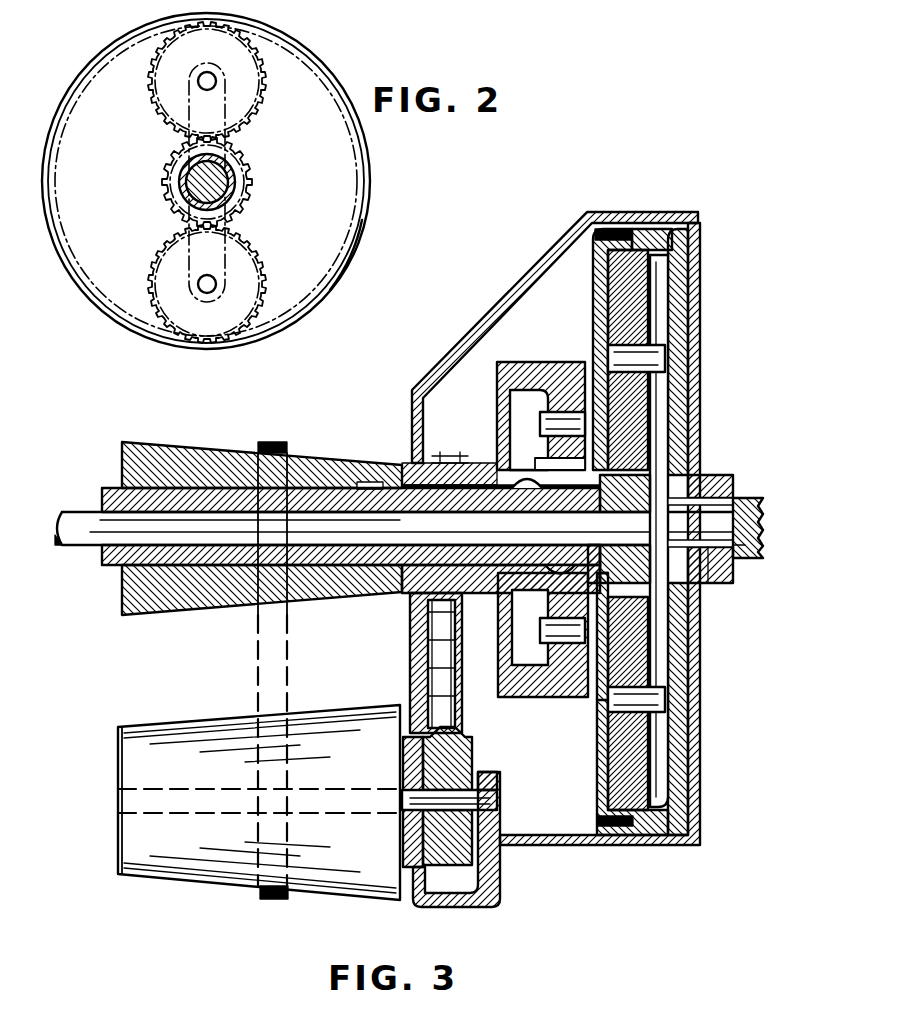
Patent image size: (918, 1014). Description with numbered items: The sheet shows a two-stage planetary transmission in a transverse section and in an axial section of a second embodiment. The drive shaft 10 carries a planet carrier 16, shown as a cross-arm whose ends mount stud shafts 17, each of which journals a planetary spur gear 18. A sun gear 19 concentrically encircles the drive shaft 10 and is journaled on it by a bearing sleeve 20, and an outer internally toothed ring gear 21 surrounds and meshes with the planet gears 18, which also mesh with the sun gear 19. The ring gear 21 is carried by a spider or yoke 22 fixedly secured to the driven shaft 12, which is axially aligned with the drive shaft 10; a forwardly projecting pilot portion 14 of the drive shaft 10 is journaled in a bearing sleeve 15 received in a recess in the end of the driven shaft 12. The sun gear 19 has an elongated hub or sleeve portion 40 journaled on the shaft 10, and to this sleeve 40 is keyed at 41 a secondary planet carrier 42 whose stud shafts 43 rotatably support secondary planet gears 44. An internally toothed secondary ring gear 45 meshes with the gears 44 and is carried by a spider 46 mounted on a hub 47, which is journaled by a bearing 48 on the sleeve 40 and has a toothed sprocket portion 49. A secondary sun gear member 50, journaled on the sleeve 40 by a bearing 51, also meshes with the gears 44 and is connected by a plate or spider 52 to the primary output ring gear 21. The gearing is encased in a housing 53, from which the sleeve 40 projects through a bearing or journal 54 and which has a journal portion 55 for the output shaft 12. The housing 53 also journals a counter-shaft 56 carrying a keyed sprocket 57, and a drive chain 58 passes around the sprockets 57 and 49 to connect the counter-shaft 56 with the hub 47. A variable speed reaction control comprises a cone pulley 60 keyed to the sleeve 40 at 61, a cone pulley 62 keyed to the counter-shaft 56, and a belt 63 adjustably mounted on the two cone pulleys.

In FIG. 2, the drive shaft 10 is at (216, 190).
In FIG. 3, the drive shaft 10 is at (75, 542).
In FIG. 3, the driven shaft 12 is at (750, 560).
In FIG. 3, the pilot portion 14 is at (712, 585).
In FIG. 3, the bearing sleeve 15 is at (748, 500).
In FIG. 2, the planet carrier 16 is at (226, 110).
In FIG. 3, the planet carrier 16 is at (659, 410).
In FIG. 2, the stud shaft 17 is at (216, 80).
In FIG. 3, the stud shaft 17 is at (640, 357).
In FIG. 2, the planetary spur gear 18 is at (163, 93).
In FIG. 3, the planetary spur gear 18 is at (634, 300).
In FIG. 2, the sun gear 19 is at (240, 164).
In FIG. 3, the sun gear 19 is at (630, 492).
In FIG. 2, the bearing sleeve 20 is at (234, 182).
In FIG. 2, the ring gear 21 is at (327, 290).
In FIG. 3, the ring gear 21 is at (638, 236).
In FIG. 2, the spider or yoke 22 is at (338, 190).
In FIG. 3, the spider or yoke 22 is at (680, 320).
In FIG. 3, the hub or sleeve portion 40 is at (102, 500).
In FIG. 3, the key 41 is at (556, 562).
In FIG. 3, the planet carrier 42 is at (525, 425).
In FIG. 3, the stud shaft 43 is at (565, 420).
In FIG. 3, the secondary planet gear 44 is at (522, 395).
In FIG. 3, the secondary ring gear 45 is at (560, 685).
In FIG. 3, the spider 46 is at (505, 665).
In FIG. 3, the hub 47 is at (465, 603).
In FIG. 3, the bearing 48 is at (470, 484).
In FIG. 3, the sprocket portion 49 is at (446, 455).
In FIG. 3, the sun gear member 50 is at (560, 505).
In FIG. 3, the bearing 51 is at (598, 565).
In FIG. 3, the plate or spider 52 is at (600, 740).
In FIG. 3, the housing 53 is at (548, 268).
In FIG. 3, the bearing or journal 54 is at (405, 464).
In FIG. 3, the journal portion 55 is at (735, 570).
In FIG. 3, the counter-shaft 56 is at (495, 800).
In FIG. 3, the sprocket 57 is at (460, 762).
In FIG. 3, the drive chain 58 is at (458, 705).
In FIG. 3, the cone pulley 60 is at (302, 462).
In FIG. 3, the key 61 is at (367, 480).
In FIG. 3, the cone pulley 62 is at (220, 865).
In FIG. 3, the belt 63 is at (272, 443).